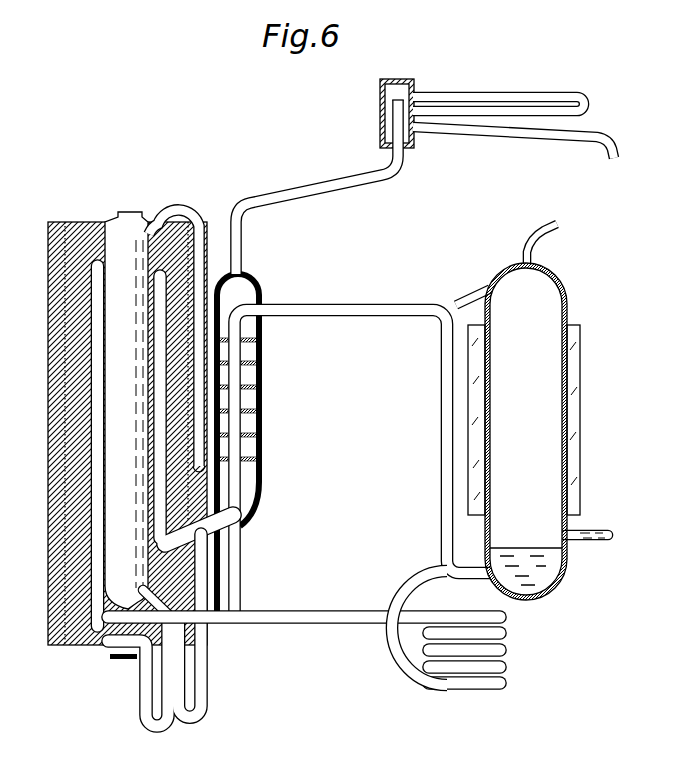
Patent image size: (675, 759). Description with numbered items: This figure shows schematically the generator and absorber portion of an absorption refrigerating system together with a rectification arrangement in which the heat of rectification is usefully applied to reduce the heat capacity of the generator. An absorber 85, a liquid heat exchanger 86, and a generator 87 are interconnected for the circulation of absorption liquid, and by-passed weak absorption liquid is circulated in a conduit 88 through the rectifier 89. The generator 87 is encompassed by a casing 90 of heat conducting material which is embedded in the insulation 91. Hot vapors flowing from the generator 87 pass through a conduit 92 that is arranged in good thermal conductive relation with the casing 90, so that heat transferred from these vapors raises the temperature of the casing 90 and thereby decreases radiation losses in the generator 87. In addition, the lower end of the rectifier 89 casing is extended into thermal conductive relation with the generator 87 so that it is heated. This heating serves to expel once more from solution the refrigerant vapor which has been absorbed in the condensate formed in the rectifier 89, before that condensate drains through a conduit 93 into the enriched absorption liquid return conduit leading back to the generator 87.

The absorber 85 is at (560, 578).
The liquid heat exchanger 86 is at (450, 693).
The generator 87 is at (113, 222).
The conduit 88 is at (328, 313).
The rectifier 89 is at (263, 434).
The casing 90 is at (60, 646).
The insulation 91 is at (78, 647).
The conduit 92 is at (185, 209).
The conduit 93 is at (203, 675).